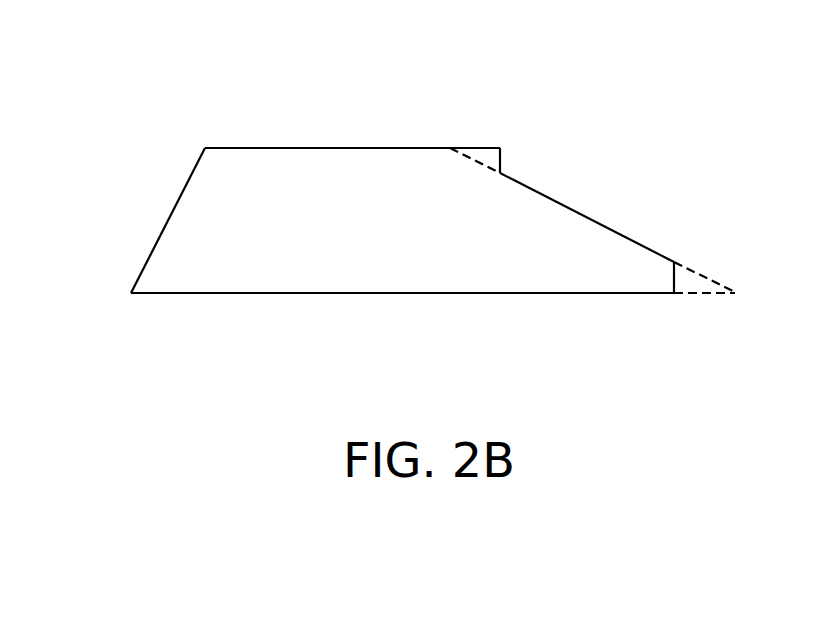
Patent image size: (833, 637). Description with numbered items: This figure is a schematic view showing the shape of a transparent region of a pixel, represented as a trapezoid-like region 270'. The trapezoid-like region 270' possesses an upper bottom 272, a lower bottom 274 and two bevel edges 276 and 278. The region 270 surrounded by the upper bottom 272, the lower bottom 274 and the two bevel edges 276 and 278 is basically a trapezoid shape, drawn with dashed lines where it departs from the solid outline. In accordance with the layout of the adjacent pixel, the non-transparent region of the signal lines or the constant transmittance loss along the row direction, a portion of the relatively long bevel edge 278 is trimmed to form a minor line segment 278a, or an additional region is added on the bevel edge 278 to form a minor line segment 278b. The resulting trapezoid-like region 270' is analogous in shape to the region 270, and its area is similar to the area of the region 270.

The region 270 is at (626, 223).
The trapezoid-like region 270' is at (617, 336).
The upper bottom 272 is at (328, 148).
The lower bottom 274 is at (370, 293).
The bevel edge 276 is at (168, 220).
The bevel edge 278 is at (590, 215).
The minor line segment 278a is at (676, 273).
The minor line segment 278b is at (500, 160).